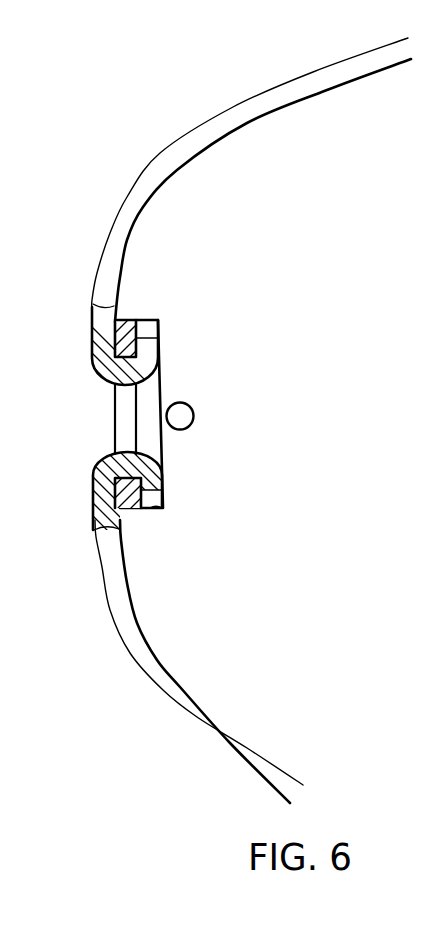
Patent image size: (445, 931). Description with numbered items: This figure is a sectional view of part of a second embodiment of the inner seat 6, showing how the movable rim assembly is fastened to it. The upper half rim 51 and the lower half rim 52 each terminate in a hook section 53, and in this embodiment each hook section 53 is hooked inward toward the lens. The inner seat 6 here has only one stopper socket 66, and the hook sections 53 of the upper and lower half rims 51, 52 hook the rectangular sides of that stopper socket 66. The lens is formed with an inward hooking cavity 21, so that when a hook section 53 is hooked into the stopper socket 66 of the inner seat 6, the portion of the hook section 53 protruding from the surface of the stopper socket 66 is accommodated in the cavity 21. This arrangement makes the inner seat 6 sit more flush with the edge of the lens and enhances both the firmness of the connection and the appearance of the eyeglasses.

The upper half rim 51 is at (112, 215).
The lower half rim 52 is at (115, 568).
The hook section 53 is at (102, 372).
The stopper socket 66 is at (127, 418).
The inner seat 6 is at (127, 490).
The inward hooking cavity 21 is at (165, 493).